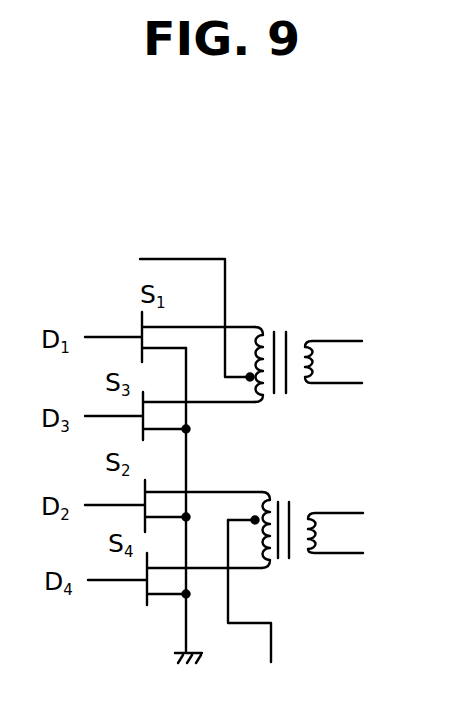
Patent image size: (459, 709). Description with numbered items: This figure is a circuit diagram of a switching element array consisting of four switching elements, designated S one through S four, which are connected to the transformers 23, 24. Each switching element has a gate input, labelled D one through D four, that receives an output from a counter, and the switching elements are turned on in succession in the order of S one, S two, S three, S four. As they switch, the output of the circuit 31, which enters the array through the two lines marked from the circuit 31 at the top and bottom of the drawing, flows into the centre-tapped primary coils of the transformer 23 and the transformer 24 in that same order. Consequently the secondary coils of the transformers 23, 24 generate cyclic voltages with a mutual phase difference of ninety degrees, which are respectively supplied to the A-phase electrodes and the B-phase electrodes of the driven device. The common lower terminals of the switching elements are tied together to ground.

The transformer 23 is at (294, 338).
The transformer 24 is at (300, 562).
The circuit 31 is at (214, 463).